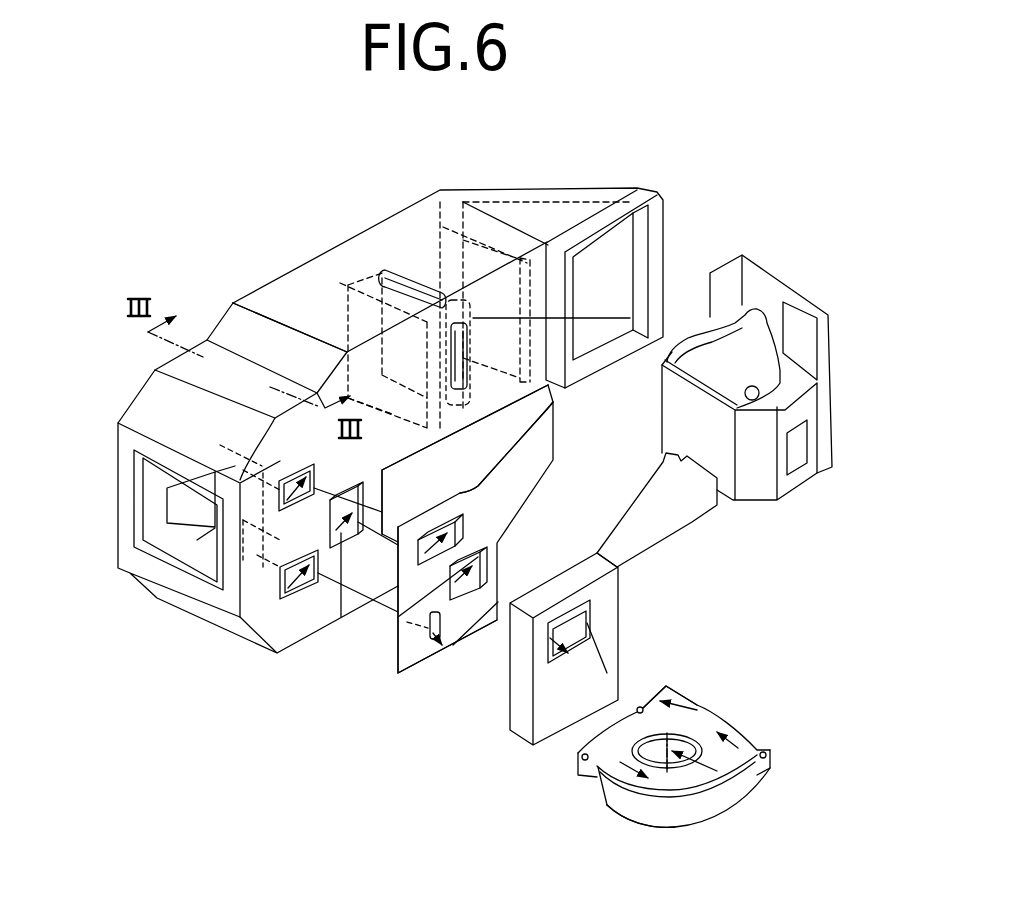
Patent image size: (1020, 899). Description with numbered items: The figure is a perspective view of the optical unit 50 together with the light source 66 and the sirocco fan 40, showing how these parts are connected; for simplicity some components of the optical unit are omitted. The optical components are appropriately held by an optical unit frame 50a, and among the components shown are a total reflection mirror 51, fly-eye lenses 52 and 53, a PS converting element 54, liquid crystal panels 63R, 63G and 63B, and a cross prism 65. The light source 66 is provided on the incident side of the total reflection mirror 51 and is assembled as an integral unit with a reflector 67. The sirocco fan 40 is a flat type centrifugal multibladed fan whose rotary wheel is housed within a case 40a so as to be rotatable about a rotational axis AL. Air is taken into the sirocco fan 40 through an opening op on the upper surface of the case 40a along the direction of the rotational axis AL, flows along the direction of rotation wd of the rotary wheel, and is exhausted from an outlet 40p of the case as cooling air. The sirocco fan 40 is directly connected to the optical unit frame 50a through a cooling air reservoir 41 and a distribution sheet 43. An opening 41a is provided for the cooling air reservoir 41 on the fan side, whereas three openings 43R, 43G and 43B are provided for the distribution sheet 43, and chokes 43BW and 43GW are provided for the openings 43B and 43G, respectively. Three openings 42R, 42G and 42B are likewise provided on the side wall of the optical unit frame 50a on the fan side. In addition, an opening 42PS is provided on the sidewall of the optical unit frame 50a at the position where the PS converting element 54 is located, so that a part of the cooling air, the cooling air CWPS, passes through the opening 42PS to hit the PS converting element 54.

The optical unit 50 is at (257, 267).
The optical unit frame 50a is at (267, 310).
The total reflection mirror 51 is at (622, 267).
The fly-eye lens 52 is at (440, 232).
The fly-eye lens 53 is at (347, 288).
The PS converting element 54 is at (382, 272).
The opening 42PS is at (464, 357).
The liquid crystal panel 63B is at (278, 481).
The liquid crystal panel 63G is at (240, 479).
The liquid crystal panel 63R is at (268, 560).
The cross prism 65 is at (175, 508).
The opening 42R is at (305, 590).
The opening 42G is at (341, 617).
The opening 42B is at (320, 473).
The distribution sheet 43 is at (554, 437).
The opening 43B is at (430, 580).
The choke 43BW is at (459, 512).
The opening 43G is at (487, 563).
The choke 43GW is at (457, 552).
The opening 43R is at (432, 641).
The cooling air CWPS is at (642, 447).
The cooling air reservoir 41 is at (624, 586).
The opening 41a is at (576, 627).
The light source 66 is at (757, 316).
The reflector 67 is at (765, 343).
The sirocco fan 40 is at (645, 827).
The case 40a is at (712, 808).
The outlet 40p is at (670, 691).
The opening op is at (618, 761).
The rotational axis AL is at (637, 739).
The direction of rotation wd is at (697, 710).